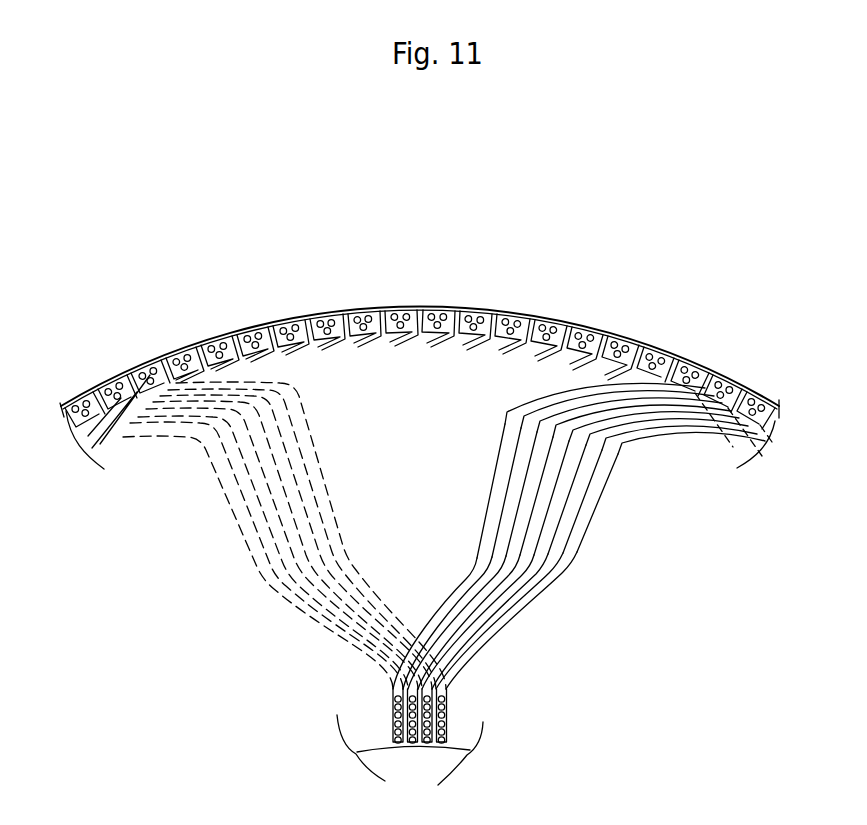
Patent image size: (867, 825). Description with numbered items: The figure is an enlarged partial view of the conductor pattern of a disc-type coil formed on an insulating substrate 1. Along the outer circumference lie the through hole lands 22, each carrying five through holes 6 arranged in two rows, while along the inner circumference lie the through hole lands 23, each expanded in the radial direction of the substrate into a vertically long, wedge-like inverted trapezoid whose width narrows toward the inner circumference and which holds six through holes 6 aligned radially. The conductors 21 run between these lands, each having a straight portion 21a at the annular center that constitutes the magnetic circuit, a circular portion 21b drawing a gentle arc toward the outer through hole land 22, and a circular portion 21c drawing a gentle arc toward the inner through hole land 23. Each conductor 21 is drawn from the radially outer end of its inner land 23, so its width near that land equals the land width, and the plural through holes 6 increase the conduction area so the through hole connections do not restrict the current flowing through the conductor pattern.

The insulating substrate 1 is at (272, 330).
The through hole land on the outer circumferential side 22 is at (305, 320).
The through hole 6 is at (138, 379).
The conductor 21 is at (444, 535).
The straight portion 21a is at (605, 513).
The circular portion 21b is at (686, 444).
The circular portion 21c is at (502, 640).
The through hole land on the inner circumferential side 23 is at (393, 690).